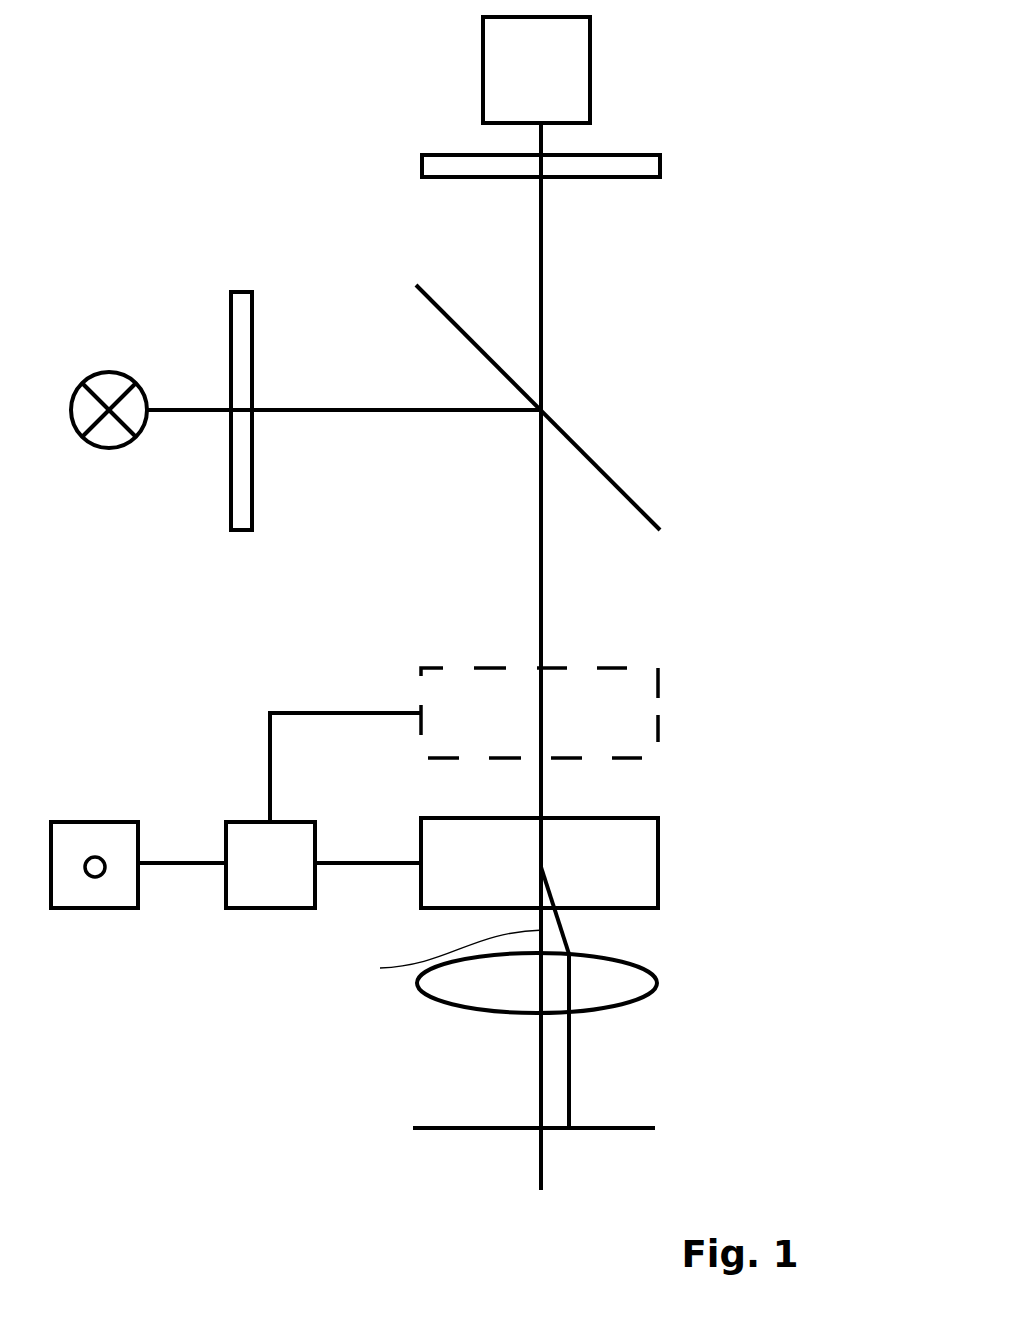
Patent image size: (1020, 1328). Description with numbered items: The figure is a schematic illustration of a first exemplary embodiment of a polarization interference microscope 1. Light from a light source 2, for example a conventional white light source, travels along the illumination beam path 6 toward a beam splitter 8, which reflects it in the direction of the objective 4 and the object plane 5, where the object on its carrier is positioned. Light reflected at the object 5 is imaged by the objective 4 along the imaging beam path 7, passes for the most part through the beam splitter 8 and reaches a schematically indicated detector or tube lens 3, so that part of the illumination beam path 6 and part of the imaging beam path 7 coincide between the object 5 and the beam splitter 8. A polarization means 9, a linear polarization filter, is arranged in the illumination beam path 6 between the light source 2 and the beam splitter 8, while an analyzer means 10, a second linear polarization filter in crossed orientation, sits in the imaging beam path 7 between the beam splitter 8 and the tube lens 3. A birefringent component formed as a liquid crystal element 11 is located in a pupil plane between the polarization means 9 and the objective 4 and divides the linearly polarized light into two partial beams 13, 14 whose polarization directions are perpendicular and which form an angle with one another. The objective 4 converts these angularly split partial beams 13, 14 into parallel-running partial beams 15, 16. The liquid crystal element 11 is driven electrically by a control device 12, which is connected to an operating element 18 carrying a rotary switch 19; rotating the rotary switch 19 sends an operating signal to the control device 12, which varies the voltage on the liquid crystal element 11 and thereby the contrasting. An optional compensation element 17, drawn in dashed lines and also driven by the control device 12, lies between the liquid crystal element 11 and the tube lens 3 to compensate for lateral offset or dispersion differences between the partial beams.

The polarization interference microscope 1 is at (298, 170).
The light source 2 is at (103, 384).
The tube lens 3 is at (536, 70).
The objective 4 is at (610, 980).
The object plane 5 is at (655, 1128).
The illumination beam path 6 is at (390, 413).
The imaging beam path 7 is at (541, 296).
The beam splitter 8 is at (639, 508).
The polarization means 9 is at (241, 305).
The analyzer means 10 is at (639, 163).
The liquid crystal element 11 is at (640, 870).
The control device 12 is at (278, 885).
The partial beam 13 is at (540, 920).
The partial beam 14 is at (570, 942).
The partial beam 15 is at (537, 1040).
The partial beam 16 is at (570, 1110).
The compensation element 17 is at (640, 713).
The operating element 18 is at (75, 895).
The rotary switch 19 is at (95, 855).